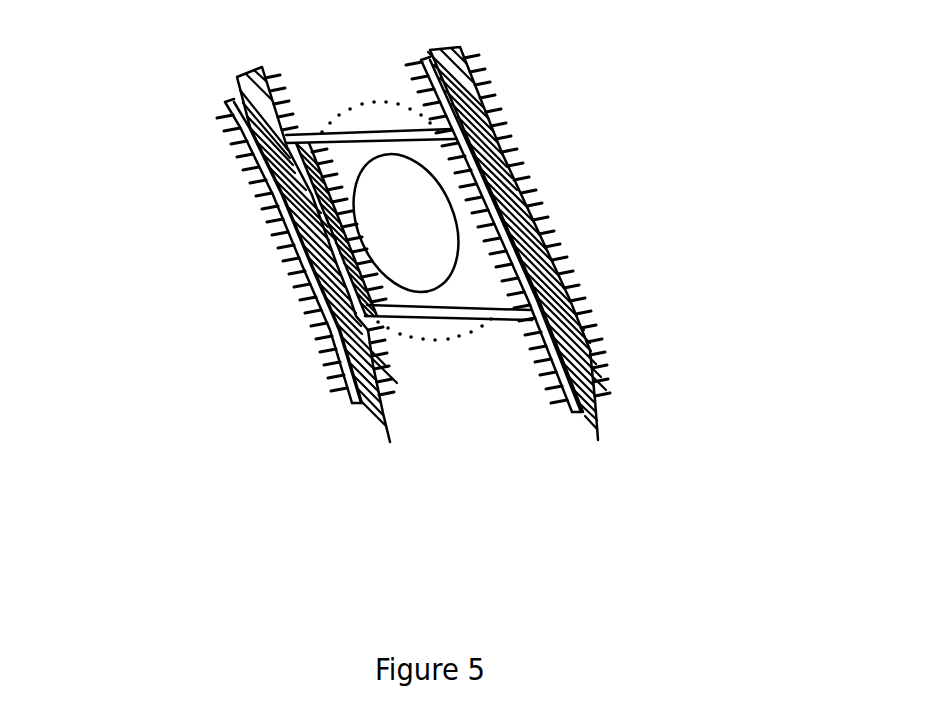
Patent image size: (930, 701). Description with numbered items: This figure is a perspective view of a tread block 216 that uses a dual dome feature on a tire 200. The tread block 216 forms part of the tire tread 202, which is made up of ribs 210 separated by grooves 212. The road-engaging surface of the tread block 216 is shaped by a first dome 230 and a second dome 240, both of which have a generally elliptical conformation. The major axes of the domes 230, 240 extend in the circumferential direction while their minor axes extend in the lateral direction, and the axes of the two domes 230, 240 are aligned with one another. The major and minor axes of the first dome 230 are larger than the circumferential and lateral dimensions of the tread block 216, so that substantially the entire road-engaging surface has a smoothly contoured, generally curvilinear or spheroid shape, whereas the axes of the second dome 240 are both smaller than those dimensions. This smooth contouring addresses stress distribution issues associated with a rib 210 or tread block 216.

The tire 200 is at (606, 116).
The rib 210 is at (421, 227).
The tread block 216 is at (378, 68).
The groove 212 is at (358, 415).
The tire tread 202 is at (610, 327).
The second dome 240 is at (358, 260).
The first dome 230 is at (327, 120).